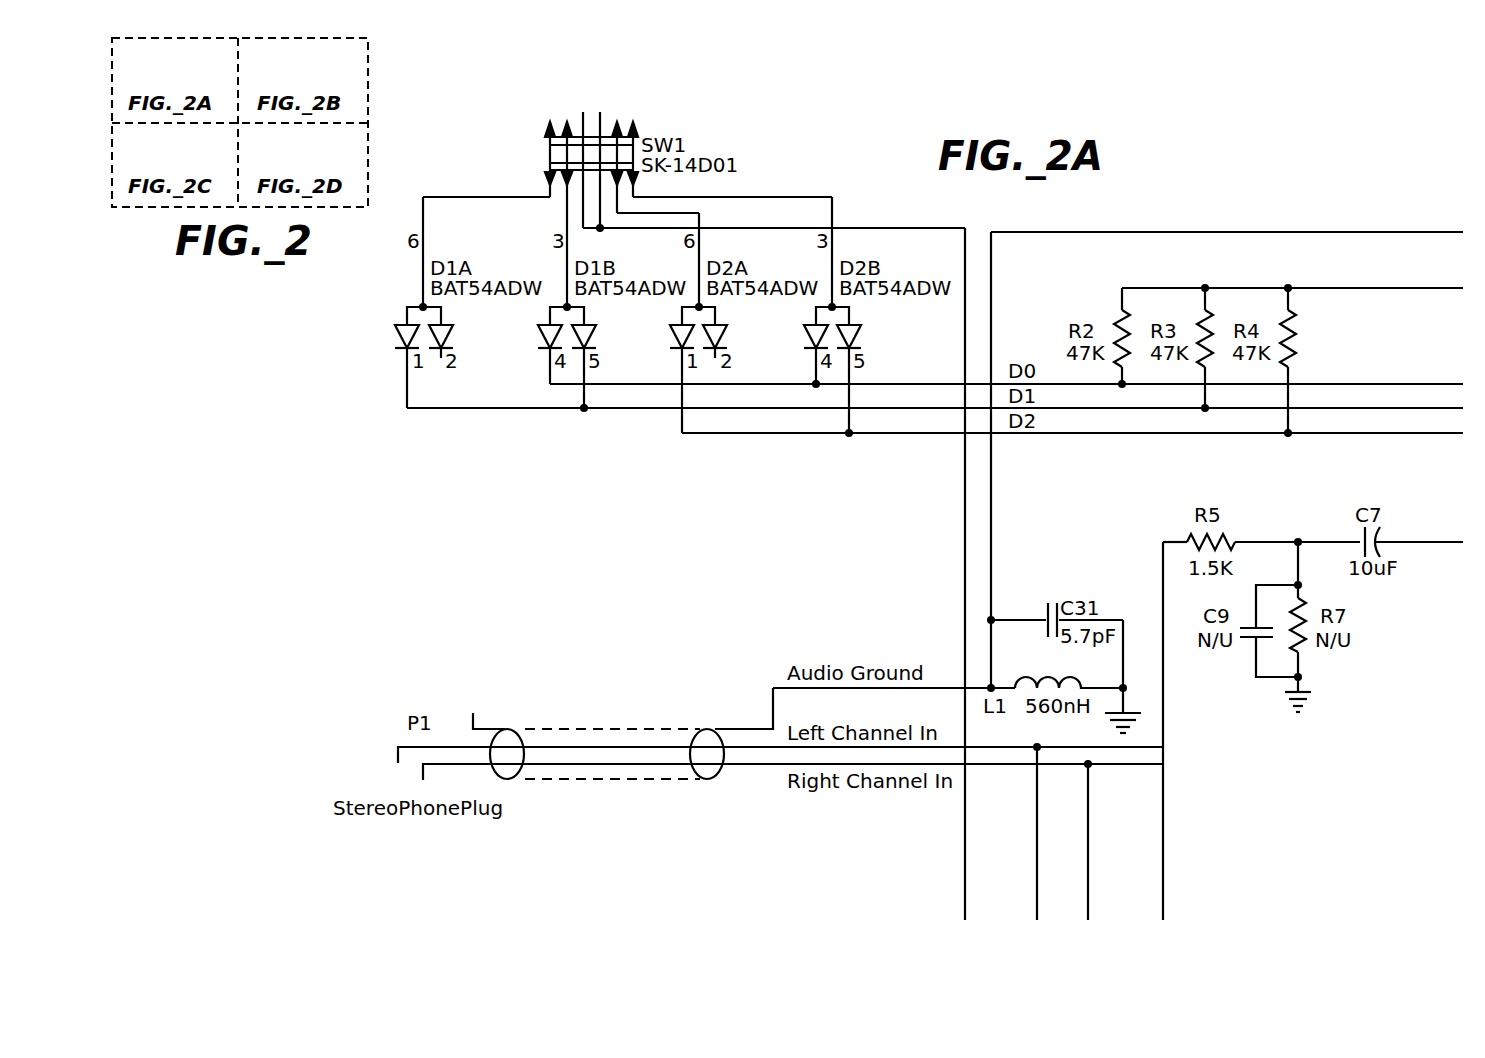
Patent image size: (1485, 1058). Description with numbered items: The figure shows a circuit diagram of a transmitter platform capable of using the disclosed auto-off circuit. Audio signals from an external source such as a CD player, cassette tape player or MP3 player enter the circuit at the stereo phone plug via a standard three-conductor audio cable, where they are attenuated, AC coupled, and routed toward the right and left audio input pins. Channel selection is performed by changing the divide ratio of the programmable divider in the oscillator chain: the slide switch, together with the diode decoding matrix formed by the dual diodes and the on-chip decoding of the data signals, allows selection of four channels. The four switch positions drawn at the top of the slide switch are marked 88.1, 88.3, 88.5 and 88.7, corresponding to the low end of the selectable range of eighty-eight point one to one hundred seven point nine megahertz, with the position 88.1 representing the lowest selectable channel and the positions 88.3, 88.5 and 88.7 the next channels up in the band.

The switch contact / pole of SW1 88.1 is at (550, 111).
The switch contact / pole of SW1 88.3 is at (567, 113).
The switch contact / pole of SW1 88.5 is at (617, 113).
The switch contact / pole of SW1 88.7 is at (633, 111).